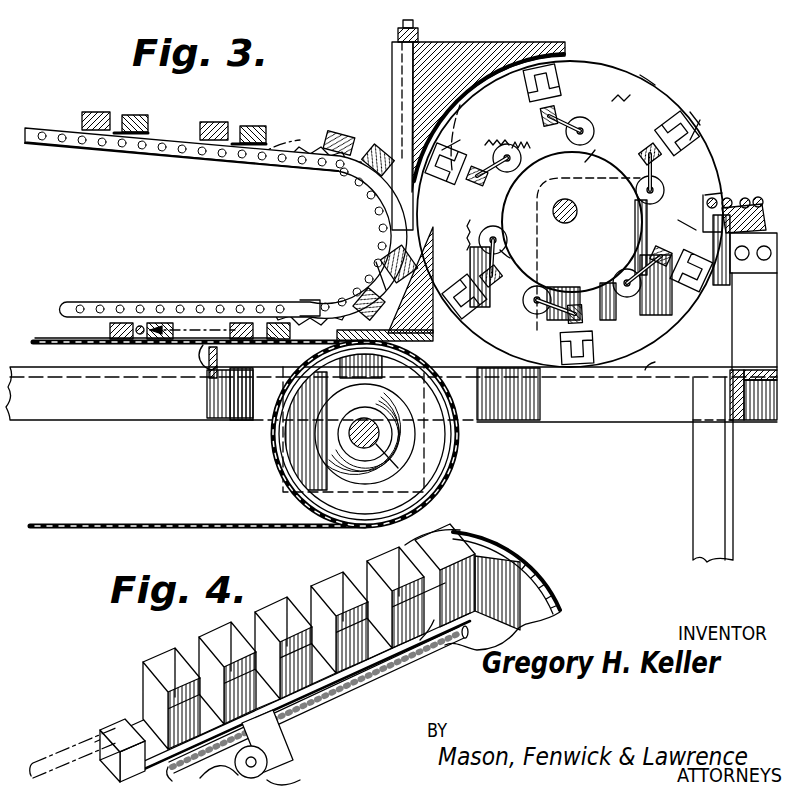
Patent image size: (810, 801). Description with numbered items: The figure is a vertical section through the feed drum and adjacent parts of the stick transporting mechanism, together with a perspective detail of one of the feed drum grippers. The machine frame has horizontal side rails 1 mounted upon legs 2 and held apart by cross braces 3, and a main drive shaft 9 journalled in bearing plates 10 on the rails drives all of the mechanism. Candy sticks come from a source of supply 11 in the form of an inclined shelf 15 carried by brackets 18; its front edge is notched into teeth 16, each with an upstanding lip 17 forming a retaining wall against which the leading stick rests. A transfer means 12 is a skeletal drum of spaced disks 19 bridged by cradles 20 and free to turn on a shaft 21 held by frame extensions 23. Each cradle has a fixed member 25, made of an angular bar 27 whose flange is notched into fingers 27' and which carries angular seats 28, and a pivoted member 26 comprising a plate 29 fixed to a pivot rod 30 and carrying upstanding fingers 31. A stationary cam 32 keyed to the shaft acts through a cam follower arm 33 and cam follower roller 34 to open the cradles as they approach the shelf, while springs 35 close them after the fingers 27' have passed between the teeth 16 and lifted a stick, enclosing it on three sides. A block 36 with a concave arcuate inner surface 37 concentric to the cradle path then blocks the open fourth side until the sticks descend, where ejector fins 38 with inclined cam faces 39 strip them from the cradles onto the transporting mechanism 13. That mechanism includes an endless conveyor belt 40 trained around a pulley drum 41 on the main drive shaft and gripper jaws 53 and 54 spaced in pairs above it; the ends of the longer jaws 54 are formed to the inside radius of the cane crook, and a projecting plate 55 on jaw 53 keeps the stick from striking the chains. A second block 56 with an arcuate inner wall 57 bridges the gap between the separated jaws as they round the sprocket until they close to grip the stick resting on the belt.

In FIG. 3, the side rails 1 is at (660, 425).
In FIG. 3, the legs 2 is at (718, 500).
In FIG. 3, the cross braces 3 is at (210, 370).
In FIG. 3, the main drive shaft 9 is at (365, 434).
In FIG. 3, the bearing plates 10 is at (430, 490).
In FIG. 3, the source of supply 11 is at (738, 190).
In FIG. 3, the transfer means 12 is at (642, 78).
In FIG. 3, the transporting mechanism 13 is at (209, 264).
In FIG. 3, the inclined shelf 15 is at (762, 210).
In FIG. 3, the teeth 16 is at (717, 255).
In FIG. 3, the upstanding lip 17 is at (708, 194).
In FIG. 3, the brackets 18 is at (753, 301).
In FIG. 3, the disks 19 is at (596, 68).
In FIG. 4, the disks 19 is at (531, 580).
In FIG. 3, the cradles 20 is at (554, 58).
In FIG. 4, the cradles 20 is at (281, 614).
In FIG. 3, the shaft 21 is at (566, 221).
In FIG. 3, the frame extensions 23 is at (665, 353).
In FIG. 3, the fixed member 25 is at (564, 70).
In FIG. 4, the fixed member 25 is at (461, 564).
In FIG. 3, the pivoted member 26 is at (570, 128).
In FIG. 4, the bar 27 is at (282, 681).
In FIG. 3, the fingers 27' is at (631, 250).
In FIG. 4, the fingers 27' is at (318, 699).
In FIG. 3, the angular seats 28 is at (689, 133).
In FIG. 4, the angular seats 28 is at (176, 692).
In FIG. 3, the plate 29 is at (569, 215).
In FIG. 3, the pivot rod 30 is at (570, 98).
In FIG. 4, the pivot rod 30 is at (430, 650).
In FIG. 3, the upstanding fingers 31 is at (636, 386).
In FIG. 4, the upstanding fingers 31 is at (112, 768).
In FIG. 3, the cam 32 is at (590, 217).
In FIG. 4, the cam 32 is at (194, 780).
In FIG. 3, the cam follower arm 33 is at (545, 187).
In FIG. 4, the cam follower arm 33 is at (298, 753).
In FIG. 3, the cam follower roller 34 is at (561, 216).
In FIG. 4, the cam follower roller 34 is at (270, 782).
In FIG. 3, the springs 35 is at (557, 116).
In FIG. 3, the block 36 is at (466, 78).
In FIG. 3, the arcuate inner surface 37 is at (485, 80).
In FIG. 3, the ejector fins 38 is at (394, 284).
In FIG. 3, the inclined cam face 39 is at (405, 125).
In FIG. 3, the endless conveyor belt 40 is at (98, 323).
In FIG. 3, the pulley drum 41 is at (278, 470).
In FIG. 3, the gripper jaws 53 is at (134, 120).
In FIG. 3, the gripper jaws 54 is at (96, 112).
In FIG. 3, the projecting plate 55 is at (232, 160).
In FIG. 3, the second block 56 is at (348, 291).
In FIG. 3, the arcuate inner wall 57 is at (382, 264).